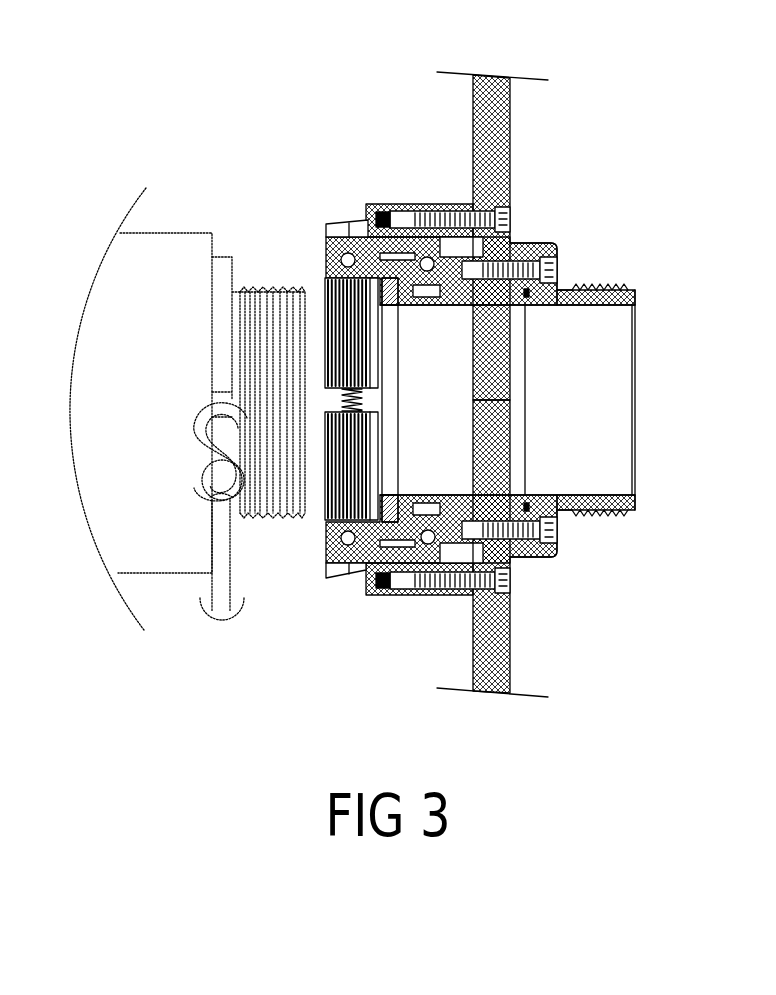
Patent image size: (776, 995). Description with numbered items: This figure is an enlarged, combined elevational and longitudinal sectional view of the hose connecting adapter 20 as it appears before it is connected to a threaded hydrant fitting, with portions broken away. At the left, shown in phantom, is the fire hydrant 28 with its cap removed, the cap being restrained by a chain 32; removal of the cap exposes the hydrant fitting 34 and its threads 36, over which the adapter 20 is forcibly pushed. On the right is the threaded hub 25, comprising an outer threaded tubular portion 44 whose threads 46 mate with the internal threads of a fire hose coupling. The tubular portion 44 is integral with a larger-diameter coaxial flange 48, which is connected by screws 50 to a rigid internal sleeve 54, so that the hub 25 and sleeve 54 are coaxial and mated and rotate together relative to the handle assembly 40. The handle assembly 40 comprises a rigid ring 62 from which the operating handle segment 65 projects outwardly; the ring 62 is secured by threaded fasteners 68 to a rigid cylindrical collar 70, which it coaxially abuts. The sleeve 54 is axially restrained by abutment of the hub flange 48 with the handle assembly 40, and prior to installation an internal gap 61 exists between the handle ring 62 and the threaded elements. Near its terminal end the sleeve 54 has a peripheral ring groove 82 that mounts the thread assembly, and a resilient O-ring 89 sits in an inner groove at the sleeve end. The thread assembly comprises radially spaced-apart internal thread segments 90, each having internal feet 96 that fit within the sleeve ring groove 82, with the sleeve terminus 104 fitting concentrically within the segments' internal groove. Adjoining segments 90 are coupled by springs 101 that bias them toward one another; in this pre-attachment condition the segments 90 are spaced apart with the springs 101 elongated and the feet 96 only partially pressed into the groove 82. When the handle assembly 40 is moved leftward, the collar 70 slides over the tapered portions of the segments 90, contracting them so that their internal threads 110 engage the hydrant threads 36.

The hose connecting adapter 20 is at (268, 89).
The threaded hub 25 is at (639, 278).
The fire hydrant 28 is at (168, 225).
The chain 32 is at (243, 604).
The hydrant fitting 34 is at (248, 253).
The threads 36 is at (258, 290).
The handle assembly 40 is at (523, 126).
The outer threaded tubular portion 44 is at (618, 307).
The threads 46 is at (600, 515).
The flange 48 is at (550, 306).
The screws 50 is at (533, 245).
The internal sleeve 54 is at (475, 306).
The internal gap 61 is at (458, 240).
The ring 62 is at (510, 237).
The operating handle segment 65 is at (512, 645).
The threaded fasteners 68 is at (426, 594).
The collar 70 is at (403, 205).
The ring groove 82 is at (432, 306).
The O-ring 89 is at (388, 305).
The thread segments 90 is at (317, 212).
The feet 96 is at (453, 300).
The springs 101 is at (362, 399).
The sleeve terminus 104 is at (412, 503).
The internal threads 110 is at (332, 507).